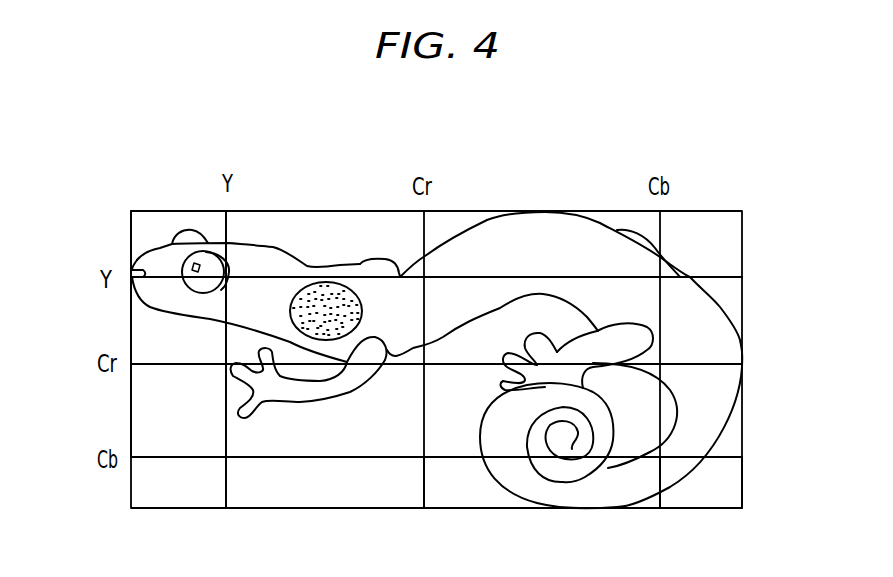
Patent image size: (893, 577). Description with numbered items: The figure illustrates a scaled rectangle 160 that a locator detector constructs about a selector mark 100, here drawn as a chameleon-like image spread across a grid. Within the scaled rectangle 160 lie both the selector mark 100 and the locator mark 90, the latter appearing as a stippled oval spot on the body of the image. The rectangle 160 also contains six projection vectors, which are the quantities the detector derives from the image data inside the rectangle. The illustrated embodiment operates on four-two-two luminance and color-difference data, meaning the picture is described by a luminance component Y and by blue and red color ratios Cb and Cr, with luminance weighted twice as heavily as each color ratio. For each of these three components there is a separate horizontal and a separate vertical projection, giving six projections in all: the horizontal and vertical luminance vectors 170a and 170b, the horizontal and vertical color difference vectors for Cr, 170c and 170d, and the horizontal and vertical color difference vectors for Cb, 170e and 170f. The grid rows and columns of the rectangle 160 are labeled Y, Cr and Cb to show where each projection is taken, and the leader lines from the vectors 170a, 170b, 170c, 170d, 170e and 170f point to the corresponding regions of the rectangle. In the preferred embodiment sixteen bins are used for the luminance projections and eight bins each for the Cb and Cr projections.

The locator mark 90 is at (325, 292).
The selector mark 100 is at (505, 242).
The scaled rectangle 160 is at (292, 211).
The horizontal luminance vector 170a is at (164, 283).
The vertical luminance vector 170b is at (223, 232).
The horizontal color difference vector Cr 170c is at (158, 365).
The vertical color difference vector Cr 170d is at (423, 477).
The horizontal color difference vector Cb 170e is at (273, 458).
The vertical color difference vector Cb 170f is at (660, 476).